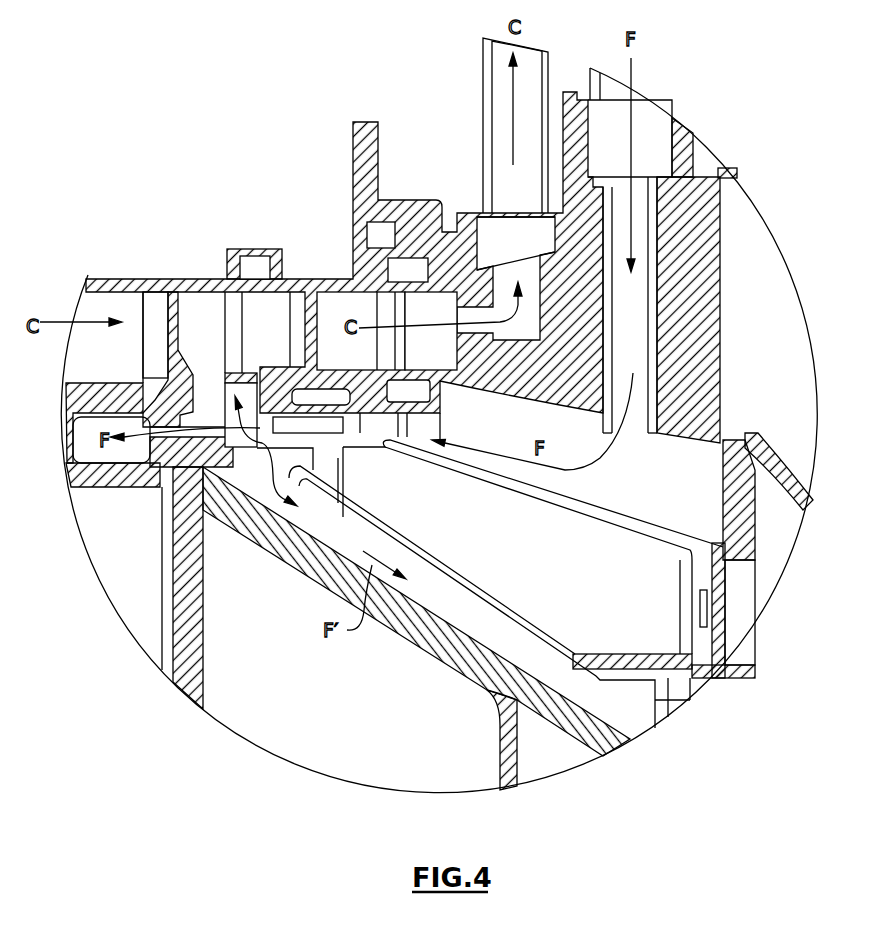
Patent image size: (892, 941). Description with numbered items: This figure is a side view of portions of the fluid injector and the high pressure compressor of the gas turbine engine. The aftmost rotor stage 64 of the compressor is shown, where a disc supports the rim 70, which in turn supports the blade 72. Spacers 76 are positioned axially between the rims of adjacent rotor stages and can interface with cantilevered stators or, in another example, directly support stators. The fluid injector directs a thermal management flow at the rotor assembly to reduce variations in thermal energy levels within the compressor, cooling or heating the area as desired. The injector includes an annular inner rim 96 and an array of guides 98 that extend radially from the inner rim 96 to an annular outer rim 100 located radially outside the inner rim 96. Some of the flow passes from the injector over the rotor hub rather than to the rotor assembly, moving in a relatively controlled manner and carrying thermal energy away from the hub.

The rotor stage 64 is at (229, 220).
The blade 72 is at (170, 323).
The spacer 76 is at (93, 400).
The rim 70 is at (163, 490).
The guide 98 is at (270, 475).
The inner rim 96 is at (347, 460).
The outer rim 100 is at (350, 382).